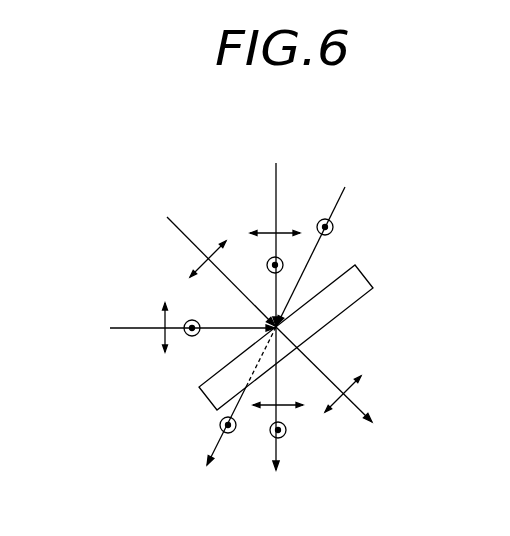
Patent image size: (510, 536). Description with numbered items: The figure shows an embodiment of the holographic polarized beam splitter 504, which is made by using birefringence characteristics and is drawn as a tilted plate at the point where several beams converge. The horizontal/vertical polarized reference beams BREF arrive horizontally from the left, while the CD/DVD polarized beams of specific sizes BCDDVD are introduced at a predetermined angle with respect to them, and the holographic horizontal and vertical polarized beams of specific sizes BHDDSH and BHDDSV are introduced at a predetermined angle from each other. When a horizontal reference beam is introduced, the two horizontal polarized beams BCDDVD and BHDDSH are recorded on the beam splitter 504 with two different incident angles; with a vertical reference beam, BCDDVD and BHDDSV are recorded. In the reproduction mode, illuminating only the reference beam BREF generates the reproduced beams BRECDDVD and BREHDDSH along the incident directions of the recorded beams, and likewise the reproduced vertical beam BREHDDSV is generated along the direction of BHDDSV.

The holographic polarized beam splitter 504 is at (430, 119).
The CD/DVD horizontal/vertical polarized beams of specific sizes BCDDVD is at (292, 229).
The reproduced CD/DVD beam BRECDDVD is at (310, 421).
The horizontal/vertical polarized reference beams BREF is at (164, 327).
The holographic horizontal polarized beam of specific size BHDDSH is at (209, 257).
The reproduced holographic horizontal polarized beam BREHDDSH is at (364, 390).
The holographic vertical polarized beam of specific size BHDDSV is at (340, 243).
The reproduced holographic vertical polarized beam BREHDDSV is at (220, 420).